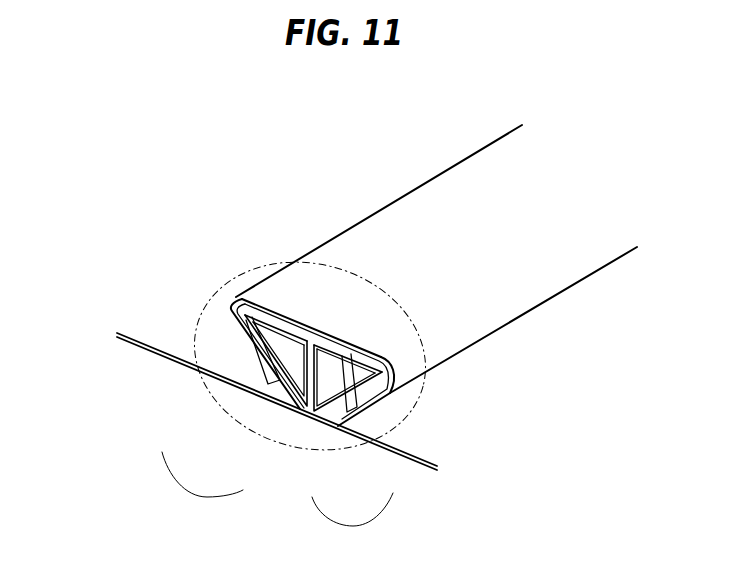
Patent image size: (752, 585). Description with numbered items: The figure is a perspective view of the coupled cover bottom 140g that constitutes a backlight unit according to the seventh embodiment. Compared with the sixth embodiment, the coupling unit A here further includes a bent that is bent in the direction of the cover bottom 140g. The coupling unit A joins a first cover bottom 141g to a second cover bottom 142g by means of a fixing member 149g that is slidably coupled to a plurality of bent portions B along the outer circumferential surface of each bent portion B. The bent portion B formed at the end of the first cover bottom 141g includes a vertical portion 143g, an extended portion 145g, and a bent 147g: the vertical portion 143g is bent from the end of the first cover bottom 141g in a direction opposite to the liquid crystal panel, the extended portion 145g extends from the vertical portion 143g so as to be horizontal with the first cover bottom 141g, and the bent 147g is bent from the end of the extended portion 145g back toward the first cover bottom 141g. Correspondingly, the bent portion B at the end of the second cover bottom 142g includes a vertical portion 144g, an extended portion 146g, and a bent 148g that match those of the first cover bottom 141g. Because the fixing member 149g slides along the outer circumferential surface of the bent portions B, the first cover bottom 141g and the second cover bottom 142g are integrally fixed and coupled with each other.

The cover bottom 140g is at (197, 157).
The first cover bottom 141g is at (168, 318).
The second cover bottom 142g is at (545, 353).
The vertical portion 143g is at (277, 386).
The vertical portion 144g is at (341, 378).
The extended portion 145g is at (285, 333).
The extended portion 146g is at (343, 352).
The bent 147g is at (244, 342).
The bent 148g is at (347, 345).
The fixing member 149g is at (417, 221).
The coupling unit A is at (233, 283).
The bent portion B is at (201, 479).